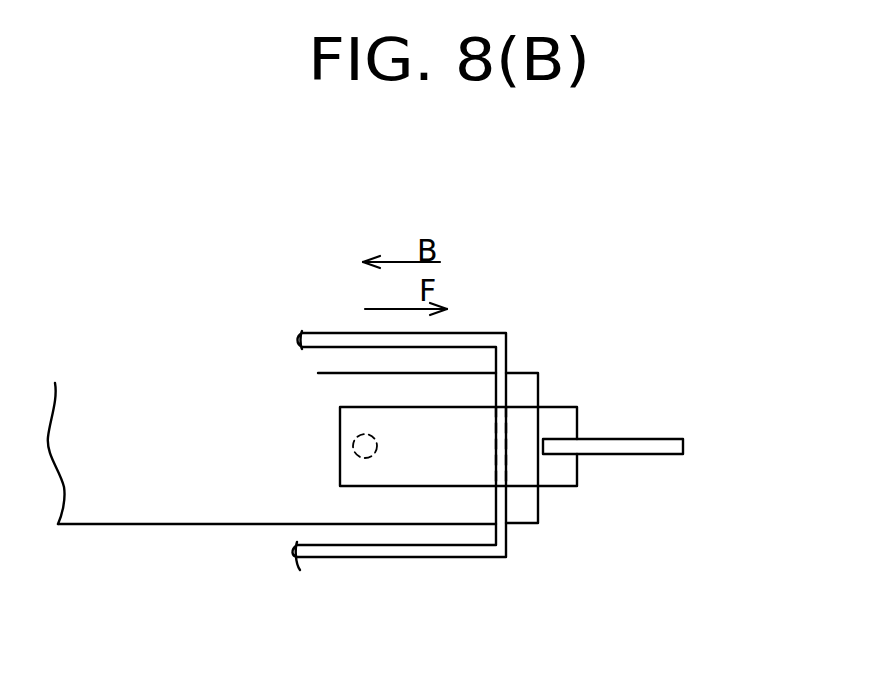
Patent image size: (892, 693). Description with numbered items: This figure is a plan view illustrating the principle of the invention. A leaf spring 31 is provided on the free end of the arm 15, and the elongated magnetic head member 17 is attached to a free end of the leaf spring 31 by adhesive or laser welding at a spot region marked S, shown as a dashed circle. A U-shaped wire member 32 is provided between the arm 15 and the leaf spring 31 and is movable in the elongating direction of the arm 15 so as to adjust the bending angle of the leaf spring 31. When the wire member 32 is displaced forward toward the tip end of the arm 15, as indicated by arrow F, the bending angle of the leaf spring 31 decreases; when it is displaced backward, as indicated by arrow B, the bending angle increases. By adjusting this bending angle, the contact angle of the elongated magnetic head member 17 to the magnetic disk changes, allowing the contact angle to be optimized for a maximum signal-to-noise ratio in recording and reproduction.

The arm 15 is at (160, 485).
The elongated magnetic head member 17 is at (637, 454).
The leaf spring 31 is at (431, 407).
The U-shaped wire member 32 is at (485, 558).